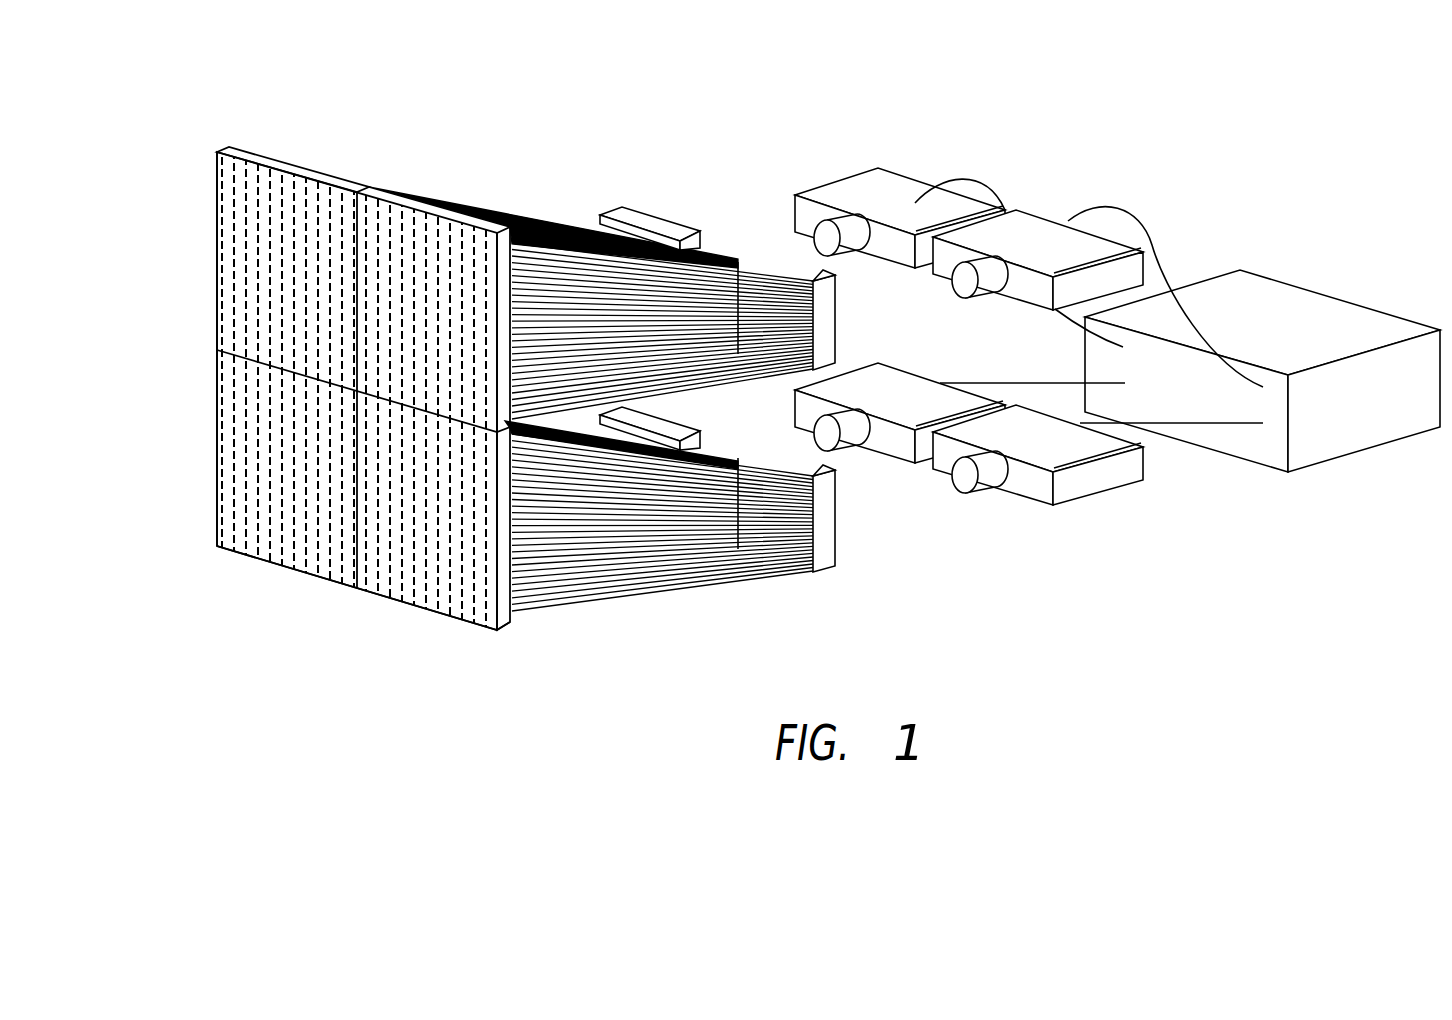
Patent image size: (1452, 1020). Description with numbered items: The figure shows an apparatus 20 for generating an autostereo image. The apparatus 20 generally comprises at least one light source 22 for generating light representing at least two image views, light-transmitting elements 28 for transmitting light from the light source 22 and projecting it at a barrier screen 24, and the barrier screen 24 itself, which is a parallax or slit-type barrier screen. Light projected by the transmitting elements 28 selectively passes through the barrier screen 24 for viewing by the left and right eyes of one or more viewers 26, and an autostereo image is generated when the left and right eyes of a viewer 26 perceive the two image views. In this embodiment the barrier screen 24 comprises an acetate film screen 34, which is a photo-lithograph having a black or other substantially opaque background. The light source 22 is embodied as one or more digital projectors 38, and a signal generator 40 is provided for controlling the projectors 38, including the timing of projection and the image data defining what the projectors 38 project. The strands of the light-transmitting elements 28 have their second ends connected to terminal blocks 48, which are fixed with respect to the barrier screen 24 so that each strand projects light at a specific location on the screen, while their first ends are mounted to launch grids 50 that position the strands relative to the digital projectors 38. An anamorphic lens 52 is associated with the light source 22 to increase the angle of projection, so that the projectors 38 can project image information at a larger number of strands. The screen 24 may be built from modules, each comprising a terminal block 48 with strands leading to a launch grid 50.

The apparatus 20 is at (1246, 110).
The light source 22 is at (1175, 249).
The barrier screen 24 is at (406, 620).
The viewer 26 is at (212, 353).
The light-transmitting elements 28 is at (720, 240).
The acetate film screen 34 is at (217, 516).
The digital projector 38 is at (988, 320).
The signal generator 40 is at (1323, 442).
The terminal block 48 is at (504, 613).
The launch grid 50 is at (829, 551).
The anamorphic lens 52 is at (991, 471).